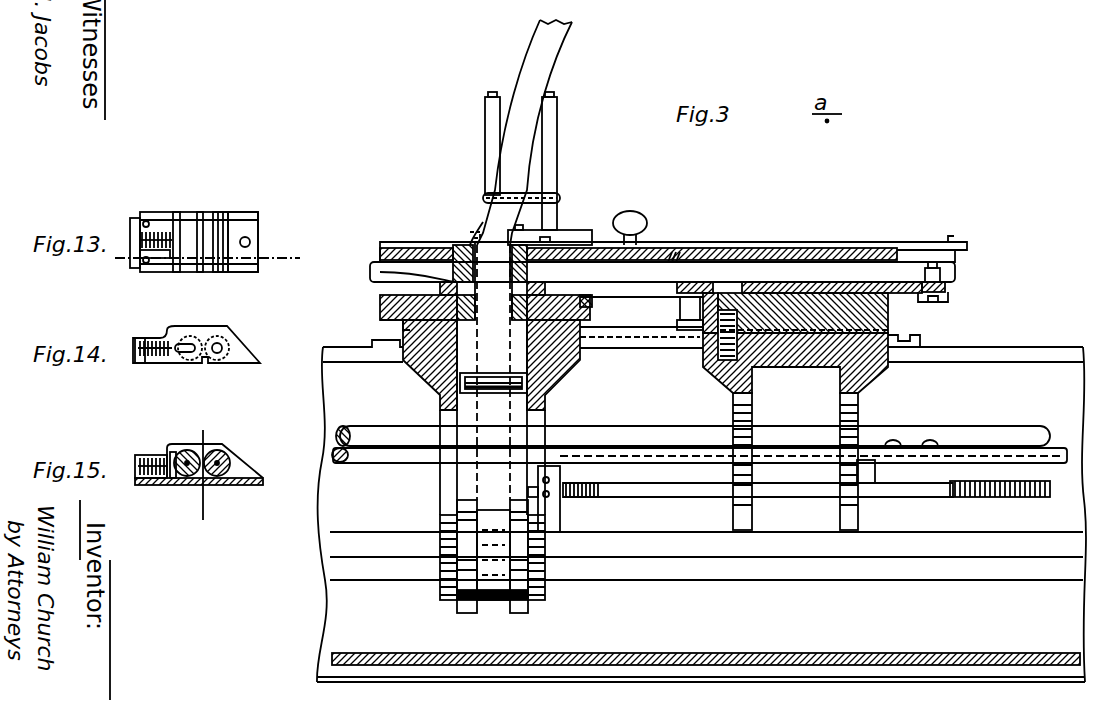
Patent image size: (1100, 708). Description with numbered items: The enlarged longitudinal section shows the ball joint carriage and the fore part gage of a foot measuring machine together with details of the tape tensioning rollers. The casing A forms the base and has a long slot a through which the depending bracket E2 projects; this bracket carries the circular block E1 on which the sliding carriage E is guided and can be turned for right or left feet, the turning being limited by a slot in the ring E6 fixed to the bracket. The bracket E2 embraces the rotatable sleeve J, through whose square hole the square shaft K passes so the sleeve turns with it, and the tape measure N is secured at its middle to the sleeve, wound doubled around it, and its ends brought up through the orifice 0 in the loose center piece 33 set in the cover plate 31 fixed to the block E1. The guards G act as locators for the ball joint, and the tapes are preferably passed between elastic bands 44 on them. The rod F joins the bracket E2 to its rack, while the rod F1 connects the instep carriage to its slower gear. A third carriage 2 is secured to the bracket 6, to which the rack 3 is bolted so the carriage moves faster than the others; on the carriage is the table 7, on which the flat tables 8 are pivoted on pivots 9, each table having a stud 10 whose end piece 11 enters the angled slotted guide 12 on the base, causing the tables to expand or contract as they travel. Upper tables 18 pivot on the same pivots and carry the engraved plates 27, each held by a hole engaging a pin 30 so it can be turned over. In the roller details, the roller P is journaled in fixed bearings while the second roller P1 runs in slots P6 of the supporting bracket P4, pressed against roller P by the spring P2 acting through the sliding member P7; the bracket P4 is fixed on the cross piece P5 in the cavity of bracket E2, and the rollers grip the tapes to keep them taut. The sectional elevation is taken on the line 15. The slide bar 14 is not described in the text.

In FIG. 3A, the tape measure N is at (530, 54).
In FIG. 15, the tape measure N is at (206, 438).
In FIG. 3A, the guards G is at (558, 122).
In FIG. 3A, the elastic bands 44 is at (560, 196).
In FIG. 3A, the orifice 0 is at (520, 228).
In FIG. 3A, the cover plate 31 is at (672, 250).
In FIG. 3A, the plates 27 is at (758, 248).
In FIG. 3A, the pin 30 is at (947, 240).
In FIG. 3A, the tables 18 is at (940, 254).
In FIG. 3A, the tables 8 is at (942, 276).
In FIG. 3A, the pivots 9 is at (946, 287).
In FIG. 3A, the table 7 is at (948, 298).
In FIG. 3A, the third sliding carriage 2 is at (866, 320).
In FIG. 3A, the slotted guide 12 is at (904, 338).
In FIG. 3A, the slot a is at (1036, 352).
In FIG. 3A, the bracket 6 is at (860, 370).
In FIG. 3A, the center piece 33 is at (455, 250).
In FIG. 3A, the slide bar 14 is at (372, 274).
In FIG. 3A, the sliding carriage E is at (380, 305).
In FIG. 3A, the circular block E1 is at (400, 320).
In FIG. 3A, the depending bracket E2 is at (572, 392).
In FIG. 3A, the ring E6 is at (592, 300).
In FIG. 3A, the stud 10 is at (690, 310).
In FIG. 3A, the piece 11 is at (690, 332).
In FIG. 3A, the spring roller P is at (468, 383).
In FIG. 13, the spring roller P is at (224, 268).
In FIG. 14, the spring roller P is at (220, 352).
In FIG. 15, the spring roller P is at (226, 455).
In FIG. 13, the second roller P1 is at (200, 230).
In FIG. 15, the second roller P1 is at (188, 452).
In FIG. 13, the spring P2 is at (160, 235).
In FIG. 14, the spring P2 is at (152, 342).
In FIG. 15, the spring P2 is at (150, 458).
In FIG. 3A, the supporting bracket P4 is at (530, 388).
In FIG. 13, the supporting bracket P4 is at (244, 226).
In FIG. 15, the supporting bracket P4 is at (240, 484).
In FIG. 3A, the cross piece P5 is at (530, 400).
In FIG. 14, the slots P6 is at (180, 352).
In FIG. 13, the sliding member P7 is at (160, 262).
In FIG. 14, the sliding member P7 is at (172, 352).
In FIG. 15, the sliding member P7 is at (175, 485).
In FIG. 3A, the rod F is at (668, 492).
In FIG. 3A, the rod F1 is at (676, 447).
In FIG. 3A, the rack 3 is at (984, 482).
In FIG. 3A, the sleeve J is at (496, 592).
In FIG. 3A, the shaft K is at (798, 575).
In FIG. 3A, the casing A is at (706, 606).
In FIG. 13, the section line 15 is at (205, 257).